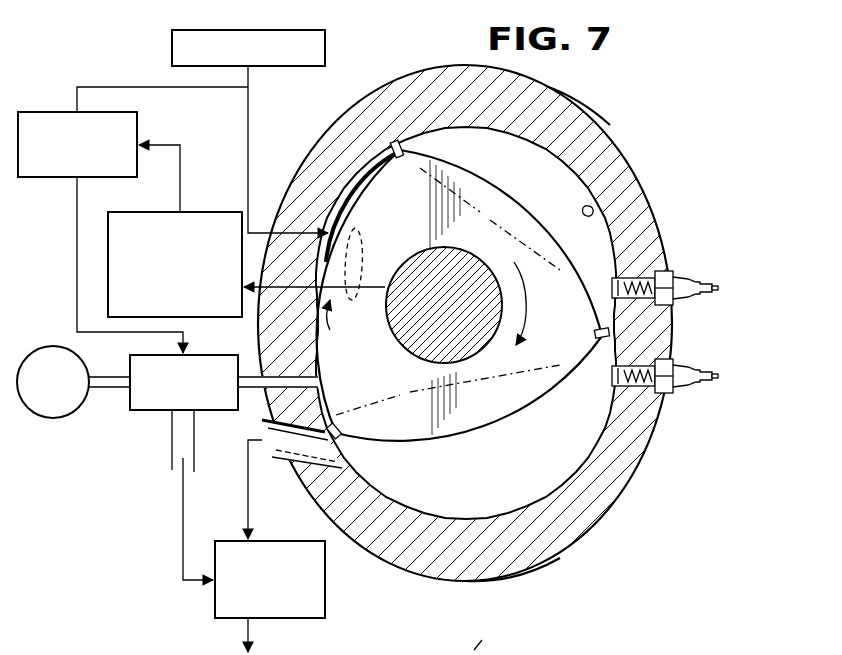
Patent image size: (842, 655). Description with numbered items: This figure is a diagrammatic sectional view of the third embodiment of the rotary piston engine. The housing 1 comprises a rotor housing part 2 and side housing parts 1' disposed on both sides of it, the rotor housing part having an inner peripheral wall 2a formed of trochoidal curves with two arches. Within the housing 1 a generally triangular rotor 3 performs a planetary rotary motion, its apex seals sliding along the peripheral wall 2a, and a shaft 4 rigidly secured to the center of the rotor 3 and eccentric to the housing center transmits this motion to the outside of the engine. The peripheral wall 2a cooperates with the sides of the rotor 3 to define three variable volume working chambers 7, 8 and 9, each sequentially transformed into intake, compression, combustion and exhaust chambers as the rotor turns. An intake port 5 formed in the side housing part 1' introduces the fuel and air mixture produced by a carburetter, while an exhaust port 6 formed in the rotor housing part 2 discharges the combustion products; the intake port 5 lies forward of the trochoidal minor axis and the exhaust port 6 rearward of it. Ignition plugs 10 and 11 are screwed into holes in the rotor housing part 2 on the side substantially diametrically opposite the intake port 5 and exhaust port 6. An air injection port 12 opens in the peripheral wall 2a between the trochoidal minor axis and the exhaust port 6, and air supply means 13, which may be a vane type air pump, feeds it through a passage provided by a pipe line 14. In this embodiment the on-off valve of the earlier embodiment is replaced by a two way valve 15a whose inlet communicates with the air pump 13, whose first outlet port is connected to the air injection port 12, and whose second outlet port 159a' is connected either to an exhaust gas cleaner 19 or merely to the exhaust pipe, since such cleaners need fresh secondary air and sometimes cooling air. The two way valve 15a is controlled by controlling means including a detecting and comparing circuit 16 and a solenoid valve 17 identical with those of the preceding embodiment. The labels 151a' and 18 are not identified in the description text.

The housing 1 is at (465, 323).
The side housing part 1' is at (571, 127).
The rotor housing part 2 is at (620, 152).
The peripheral wall 2a is at (596, 210).
The rotor 3 is at (512, 242).
The shaft 4 is at (406, 344).
The intake port 5 is at (331, 228).
The exhaust port 6 is at (332, 456).
The working chamber 7 is at (372, 170).
The working chamber 8 is at (495, 152).
The working chamber 9 is at (513, 478).
The ignition plug 10 is at (632, 388).
The ignition plug 11 is at (632, 308).
The air injection port 12 is at (288, 374).
The air supply means 13 is at (40, 420).
The pipe line 14 is at (252, 402).
The two way valve 15a is at (148, 410).
The second outlet port 159a' is at (159, 495).
The air supply passage 151a' is at (441, 643).
The detecting and comparing circuit 16 is at (216, 211).
The solenoid valve 17 is at (60, 111).
The carburetor 18 is at (326, 48).
The exhaust gas cleaner 19 is at (326, 600).